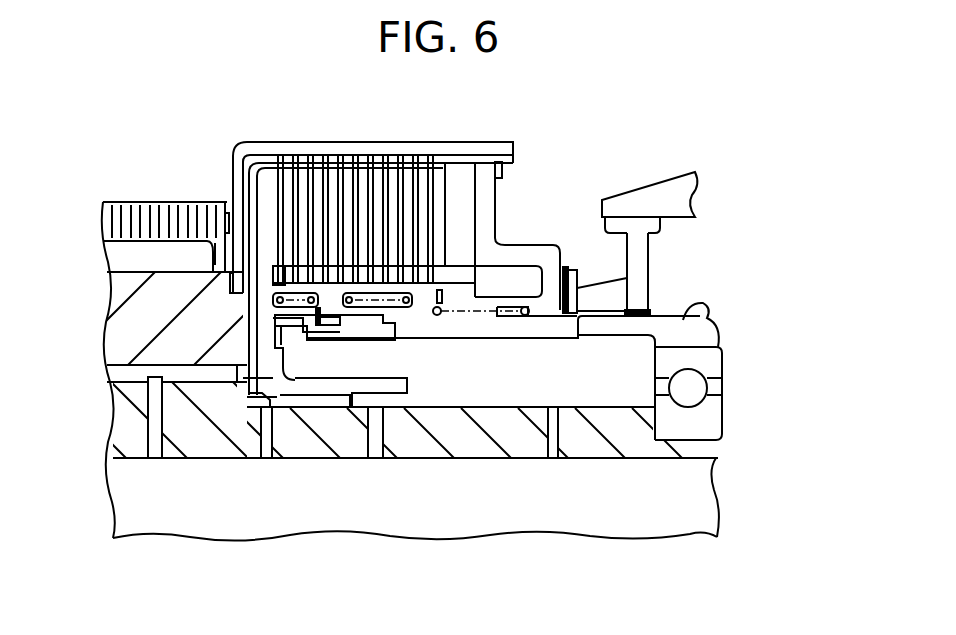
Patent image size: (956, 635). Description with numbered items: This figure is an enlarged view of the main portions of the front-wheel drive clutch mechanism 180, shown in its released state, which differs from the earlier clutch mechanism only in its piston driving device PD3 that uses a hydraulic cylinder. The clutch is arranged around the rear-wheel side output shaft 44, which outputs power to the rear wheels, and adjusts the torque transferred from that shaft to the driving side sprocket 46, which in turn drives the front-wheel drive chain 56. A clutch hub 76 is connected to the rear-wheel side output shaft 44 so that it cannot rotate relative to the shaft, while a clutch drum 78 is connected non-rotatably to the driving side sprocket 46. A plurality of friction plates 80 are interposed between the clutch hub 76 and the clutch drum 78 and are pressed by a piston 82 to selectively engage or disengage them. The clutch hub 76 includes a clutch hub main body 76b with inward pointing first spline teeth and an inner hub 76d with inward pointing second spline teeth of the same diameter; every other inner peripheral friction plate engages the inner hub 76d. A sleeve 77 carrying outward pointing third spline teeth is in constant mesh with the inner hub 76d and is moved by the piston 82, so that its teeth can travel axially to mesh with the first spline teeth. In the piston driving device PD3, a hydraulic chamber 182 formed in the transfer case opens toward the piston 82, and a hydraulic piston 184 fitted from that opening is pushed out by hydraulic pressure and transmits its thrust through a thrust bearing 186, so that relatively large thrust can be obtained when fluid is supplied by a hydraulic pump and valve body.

The front-wheel drive clutch mechanism 180 is at (293, 103).
The clutch drum 78 is at (349, 158).
The friction plates 80 is at (448, 186).
The piston 82 is at (498, 252).
The thrust bearing 186 is at (569, 264).
The hydraulic piston 184 is at (638, 256).
The piston driving device PD3 is at (700, 157).
The hydraulic chamber 182 is at (705, 302).
The sleeve 77 is at (387, 334).
The clutch hub 76 is at (313, 353).
The clutch hub main body 76b is at (258, 382).
The inner hub 76d is at (332, 302).
The front-wheel drive chain 56 is at (162, 200).
The driving side sprocket 46 is at (137, 350).
The rear-wheel side output shaft 44 is at (200, 452).